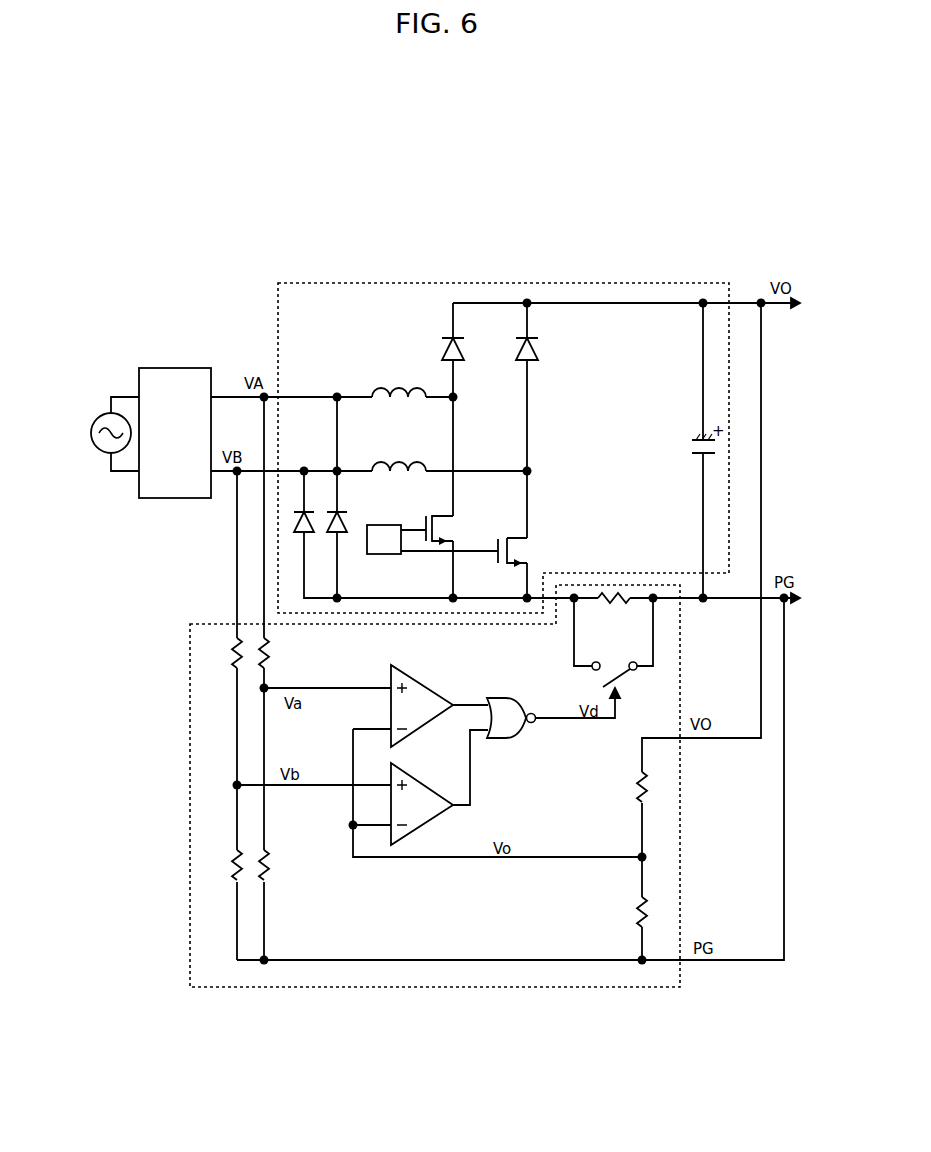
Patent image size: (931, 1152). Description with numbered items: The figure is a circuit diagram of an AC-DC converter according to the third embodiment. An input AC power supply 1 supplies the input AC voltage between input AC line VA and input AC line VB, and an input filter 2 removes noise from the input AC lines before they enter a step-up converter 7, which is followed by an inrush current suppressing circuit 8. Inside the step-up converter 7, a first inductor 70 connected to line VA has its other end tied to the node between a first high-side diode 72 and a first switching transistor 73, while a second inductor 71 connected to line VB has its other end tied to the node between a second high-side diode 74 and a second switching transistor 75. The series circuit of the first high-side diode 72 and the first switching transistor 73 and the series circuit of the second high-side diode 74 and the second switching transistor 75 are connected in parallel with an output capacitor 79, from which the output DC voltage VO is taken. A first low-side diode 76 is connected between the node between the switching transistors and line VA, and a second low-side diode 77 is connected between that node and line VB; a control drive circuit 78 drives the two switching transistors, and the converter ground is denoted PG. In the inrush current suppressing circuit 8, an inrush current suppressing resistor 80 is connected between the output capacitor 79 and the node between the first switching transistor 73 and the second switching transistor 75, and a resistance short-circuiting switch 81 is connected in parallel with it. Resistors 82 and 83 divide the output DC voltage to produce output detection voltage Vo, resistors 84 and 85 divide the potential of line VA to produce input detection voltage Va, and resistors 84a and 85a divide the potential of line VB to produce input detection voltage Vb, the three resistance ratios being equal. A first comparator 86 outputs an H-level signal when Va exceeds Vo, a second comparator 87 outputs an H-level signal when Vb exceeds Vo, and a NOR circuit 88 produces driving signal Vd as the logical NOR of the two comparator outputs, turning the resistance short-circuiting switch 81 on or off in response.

The input AC power supply 1 is at (94, 422).
The input filter 2 is at (172, 368).
The step-up converter 7 is at (278, 298).
The inrush current suppressing circuit 8 is at (190, 650).
The first inductor 70 is at (402, 385).
The second inductor 71 is at (402, 460).
The first high-side diode 72 is at (464, 348).
The first switching transistor 73 is at (450, 533).
The second high-side diode 74 is at (538, 348).
The second switching transistor 75 is at (524, 558).
The first low-side diode 76 is at (333, 542).
The second low-side diode 77 is at (300, 542).
The control drive circuit 78 is at (380, 525).
The output capacitor 79 is at (692, 452).
The inrush current suppressing resistor 80 is at (618, 605).
The resistance short-circuiting switch 81 is at (627, 680).
The resistor 82 is at (635, 800).
The resistor 83 is at (635, 922).
The resistor 84 is at (270, 665).
The resistor 84a is at (233, 663).
The resistor 85 is at (268, 884).
The resistor 85a is at (233, 880).
The first comparator 86 is at (424, 688).
The second comparator 87 is at (424, 784).
The NOR circuit 88 is at (510, 740).